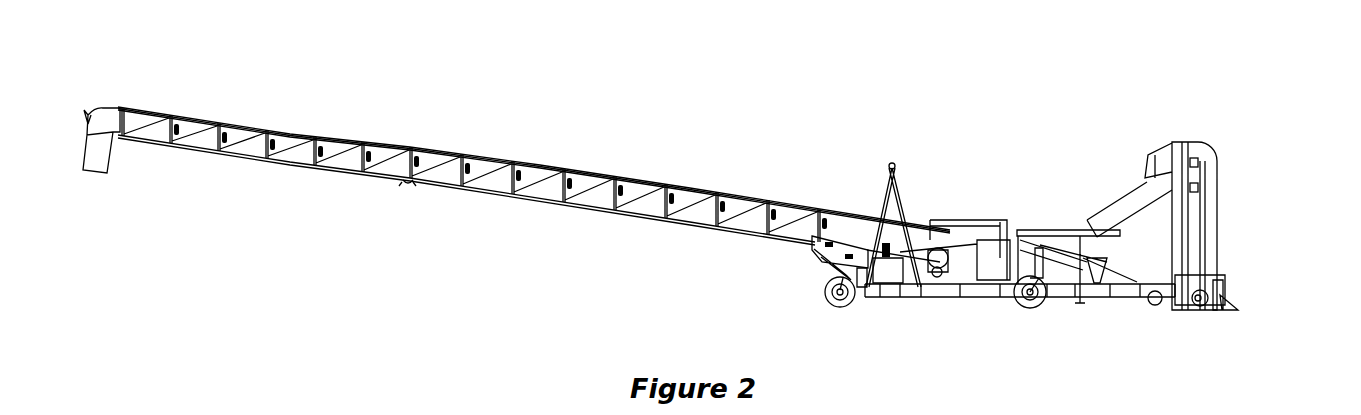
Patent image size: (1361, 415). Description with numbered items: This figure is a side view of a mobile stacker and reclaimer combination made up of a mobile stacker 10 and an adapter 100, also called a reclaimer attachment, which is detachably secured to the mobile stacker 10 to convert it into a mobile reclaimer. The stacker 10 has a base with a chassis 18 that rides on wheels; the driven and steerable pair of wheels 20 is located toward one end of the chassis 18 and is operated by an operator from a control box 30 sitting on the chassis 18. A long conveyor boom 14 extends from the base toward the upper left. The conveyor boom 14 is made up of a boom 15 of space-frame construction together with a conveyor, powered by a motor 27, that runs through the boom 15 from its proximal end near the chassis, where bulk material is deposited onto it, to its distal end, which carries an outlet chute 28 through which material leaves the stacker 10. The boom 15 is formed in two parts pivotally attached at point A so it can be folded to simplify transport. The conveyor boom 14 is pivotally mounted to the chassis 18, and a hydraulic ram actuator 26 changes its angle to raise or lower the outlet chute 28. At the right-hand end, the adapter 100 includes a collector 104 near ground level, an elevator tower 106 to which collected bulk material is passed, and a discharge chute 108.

The mobile stacker 10 is at (629, 216).
The conveyor boom 14 is at (508, 148).
The boom 15 is at (448, 149).
The chassis 18 is at (898, 298).
The driven and steerable pair of wheels 20 is at (823, 290).
The actuator (hydraulic ram) 26 is at (822, 265).
The motor 27 is at (940, 250).
The outlet chute 28 is at (102, 161).
The control box 30 is at (993, 218).
The adapter (reclaimer attachment) 100 is at (1207, 223).
The collector 104 is at (1224, 324).
The elevator tower 106 is at (1202, 142).
The discharge chute 108 is at (1127, 203).
The pivot point A is at (405, 186).